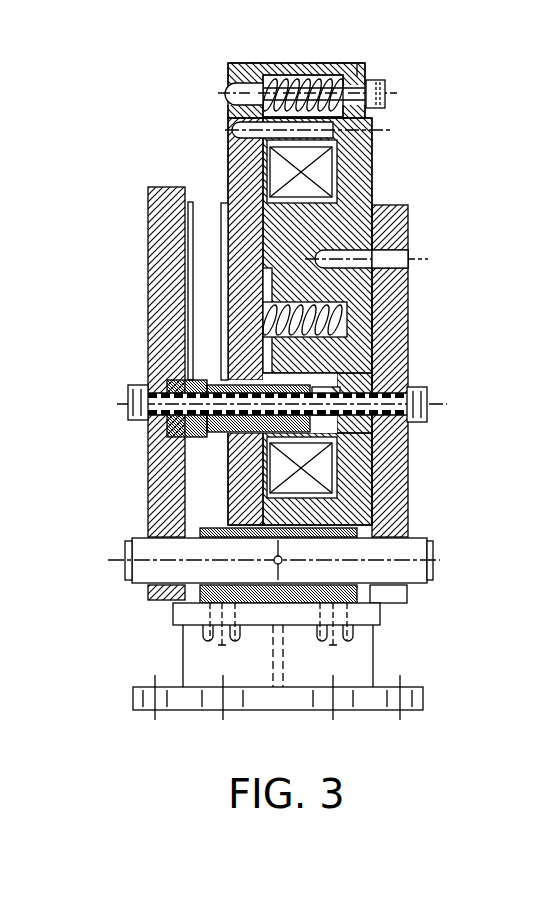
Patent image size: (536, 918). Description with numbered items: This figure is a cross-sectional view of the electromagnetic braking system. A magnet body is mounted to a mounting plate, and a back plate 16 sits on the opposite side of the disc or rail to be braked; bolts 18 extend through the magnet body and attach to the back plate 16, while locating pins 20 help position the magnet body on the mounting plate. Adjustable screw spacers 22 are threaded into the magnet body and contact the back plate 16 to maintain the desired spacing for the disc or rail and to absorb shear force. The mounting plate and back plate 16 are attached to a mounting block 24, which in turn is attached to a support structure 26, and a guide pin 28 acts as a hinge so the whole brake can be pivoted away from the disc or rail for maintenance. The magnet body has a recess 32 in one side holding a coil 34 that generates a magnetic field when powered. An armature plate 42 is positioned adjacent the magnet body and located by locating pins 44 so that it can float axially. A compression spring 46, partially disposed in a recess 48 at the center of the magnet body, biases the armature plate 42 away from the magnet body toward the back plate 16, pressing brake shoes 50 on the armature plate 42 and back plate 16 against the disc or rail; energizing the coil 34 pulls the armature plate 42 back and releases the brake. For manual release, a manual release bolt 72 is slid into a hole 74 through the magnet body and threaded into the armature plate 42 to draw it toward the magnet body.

The back plate 16 is at (148, 450).
The bolt 18 is at (398, 358).
The locating pin 20 is at (398, 254).
The adjustable spacer 22 is at (170, 478).
The mounting block 24 is at (200, 603).
The support structure 26 is at (345, 648).
The guide pin 28 is at (398, 570).
The recess 32 is at (322, 170).
The coil 34 is at (372, 167).
The armature plate 42 is at (235, 155).
The locating pin 44 is at (228, 90).
The compression spring 46 is at (350, 318).
The recess 48 is at (233, 367).
The brake shoe 50 is at (220, 300).
The manual release bolt 72 is at (357, 63).
The hole 74 is at (385, 100).